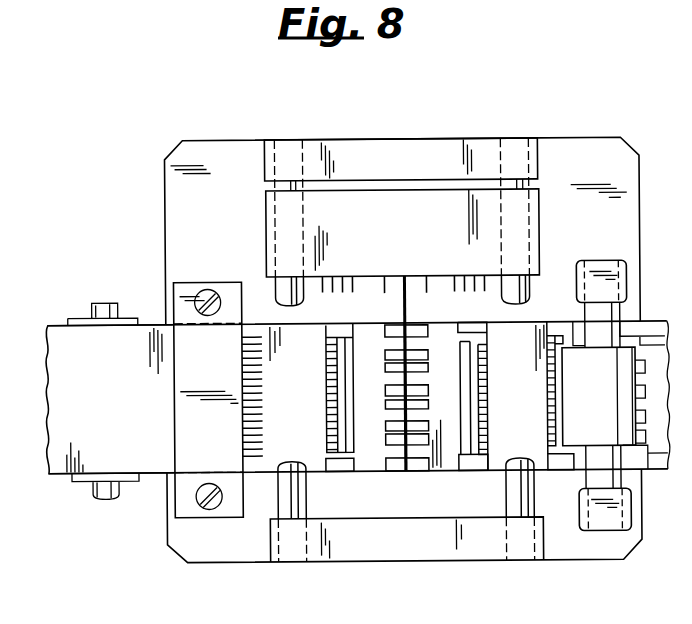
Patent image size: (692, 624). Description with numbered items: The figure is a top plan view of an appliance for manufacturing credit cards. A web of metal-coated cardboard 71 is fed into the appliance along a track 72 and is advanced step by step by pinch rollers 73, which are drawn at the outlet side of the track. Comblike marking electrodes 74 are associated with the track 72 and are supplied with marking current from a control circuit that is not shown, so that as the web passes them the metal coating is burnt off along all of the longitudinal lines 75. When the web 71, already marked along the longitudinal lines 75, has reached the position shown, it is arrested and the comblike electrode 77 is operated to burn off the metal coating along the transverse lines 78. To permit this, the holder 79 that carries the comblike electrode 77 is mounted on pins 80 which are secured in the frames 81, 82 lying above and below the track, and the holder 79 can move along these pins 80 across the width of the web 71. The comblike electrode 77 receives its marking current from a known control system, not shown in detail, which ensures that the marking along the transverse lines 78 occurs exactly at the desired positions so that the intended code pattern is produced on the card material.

The web of metal-coated cardboard 71 is at (63, 392).
The track 72 is at (185, 430).
The pinch rollers 73 is at (580, 408).
The comblike marking electrodes 74 is at (265, 415).
The longitudinal lines 75 is at (392, 330).
The comblike electrode 77 is at (400, 277).
The transverse lines 78 is at (432, 330).
The holder 79 is at (386, 230).
The pins 80 is at (285, 302).
The frame 81 is at (389, 150).
The frame 82 is at (417, 550).